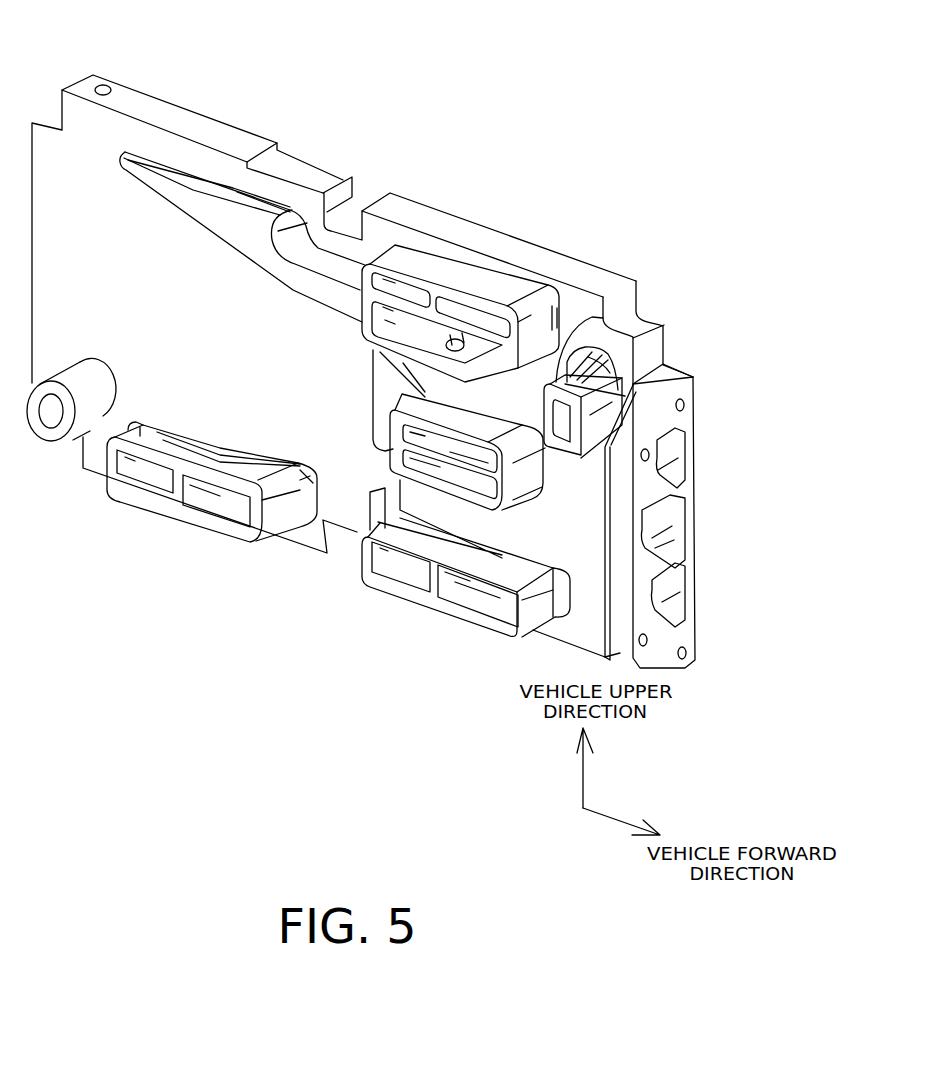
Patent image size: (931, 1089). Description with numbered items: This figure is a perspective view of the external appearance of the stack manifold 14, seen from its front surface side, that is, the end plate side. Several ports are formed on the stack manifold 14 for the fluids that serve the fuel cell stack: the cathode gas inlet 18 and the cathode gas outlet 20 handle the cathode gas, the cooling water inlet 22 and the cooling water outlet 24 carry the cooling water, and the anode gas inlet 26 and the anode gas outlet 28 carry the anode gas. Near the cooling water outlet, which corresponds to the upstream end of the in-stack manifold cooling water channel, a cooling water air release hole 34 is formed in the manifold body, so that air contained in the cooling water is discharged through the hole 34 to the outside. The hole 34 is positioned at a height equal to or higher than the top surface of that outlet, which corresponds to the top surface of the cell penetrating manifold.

The stack manifold 14 is at (598, 168).
The cathode gas inlet 18 is at (230, 515).
The cathode gas outlet 20 is at (482, 323).
The cooling water inlet 22 is at (675, 457).
The cooling water outlet 24 is at (433, 470).
The anode gas inlet 26 is at (634, 305).
The anode gas outlet 28 is at (56, 418).
The cooling water air release hole 34 is at (104, 86).